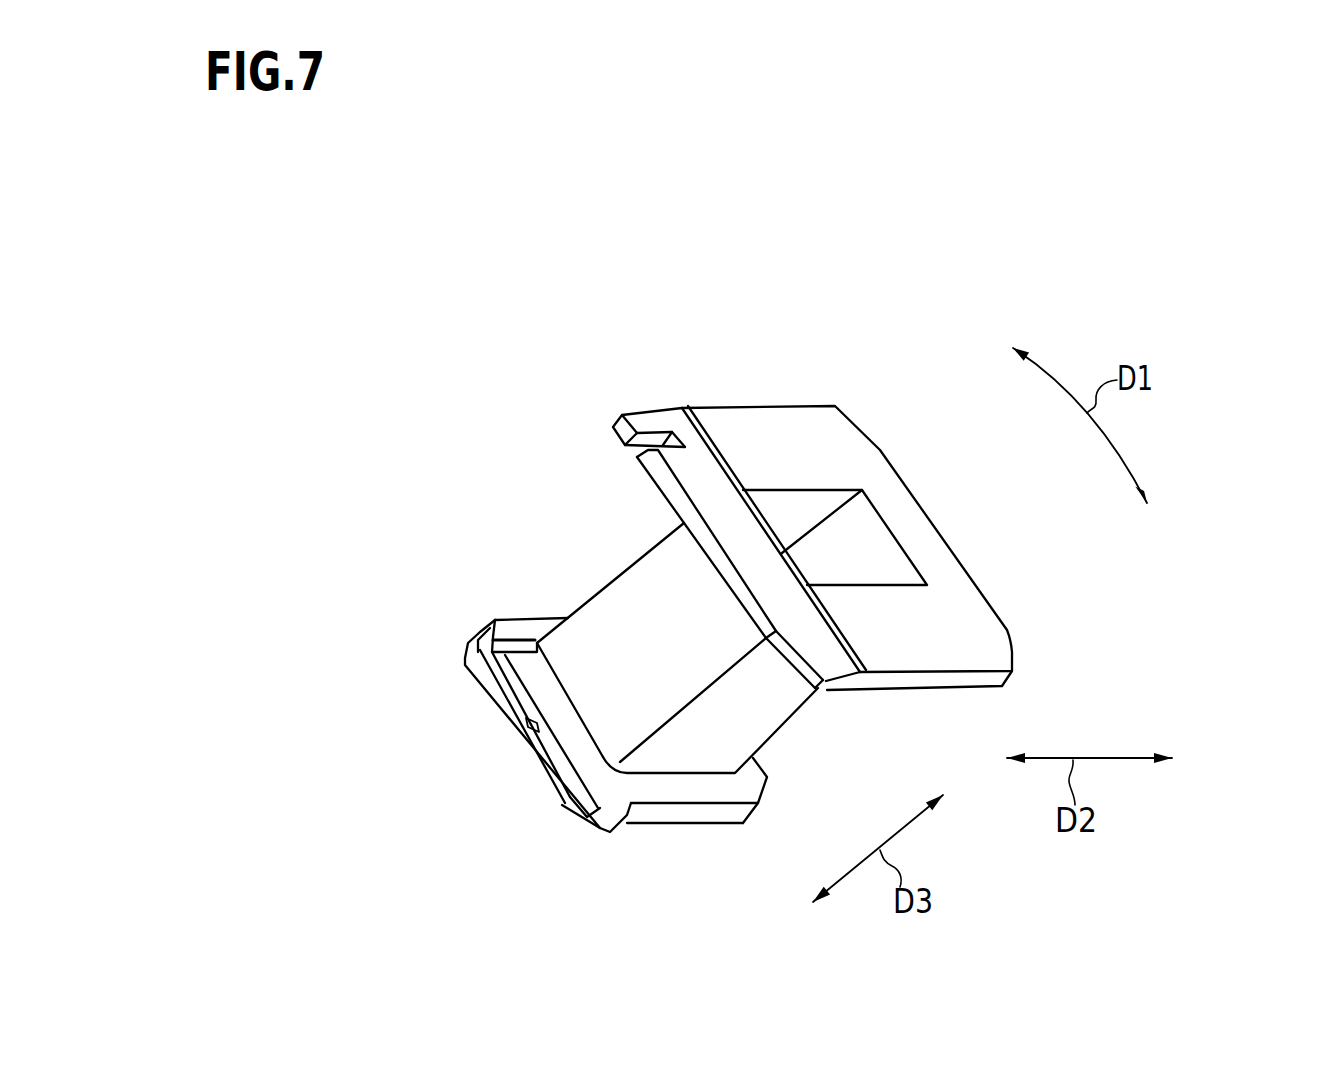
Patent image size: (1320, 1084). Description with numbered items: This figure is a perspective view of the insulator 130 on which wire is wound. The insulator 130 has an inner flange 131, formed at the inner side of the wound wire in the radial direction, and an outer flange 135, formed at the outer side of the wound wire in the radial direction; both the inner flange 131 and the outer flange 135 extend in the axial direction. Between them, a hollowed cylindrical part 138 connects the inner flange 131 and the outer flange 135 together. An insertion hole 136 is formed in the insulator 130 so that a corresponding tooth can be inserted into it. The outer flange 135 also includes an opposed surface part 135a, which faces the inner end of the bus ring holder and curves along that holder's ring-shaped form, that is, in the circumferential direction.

The insulator 130 is at (800, 337).
The inner flange 131 is at (517, 621).
The outer flange 135 is at (844, 437).
The opposed surface part 135a is at (688, 477).
The insertion hole 136 is at (878, 547).
The hollowed cylindrical part 138 is at (622, 600).